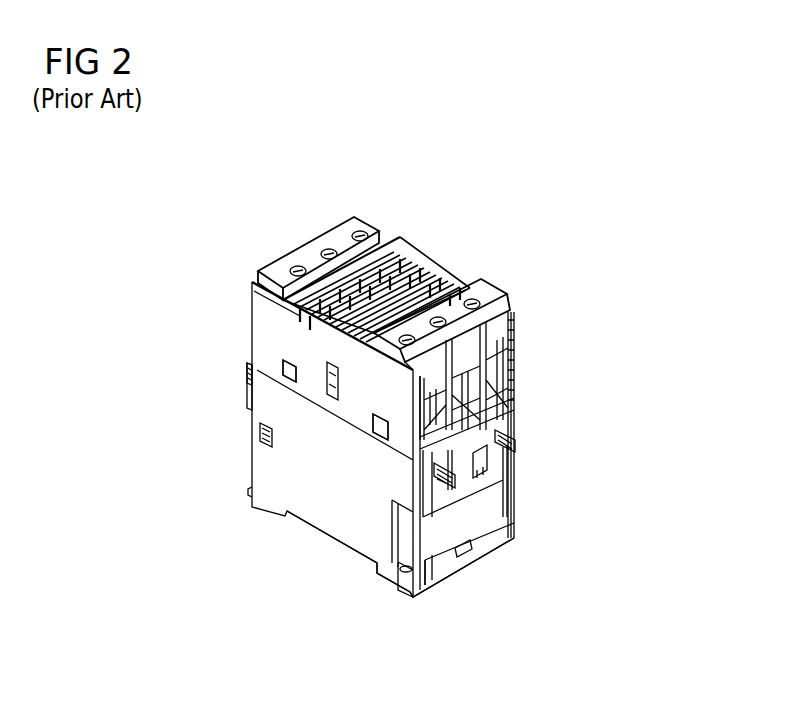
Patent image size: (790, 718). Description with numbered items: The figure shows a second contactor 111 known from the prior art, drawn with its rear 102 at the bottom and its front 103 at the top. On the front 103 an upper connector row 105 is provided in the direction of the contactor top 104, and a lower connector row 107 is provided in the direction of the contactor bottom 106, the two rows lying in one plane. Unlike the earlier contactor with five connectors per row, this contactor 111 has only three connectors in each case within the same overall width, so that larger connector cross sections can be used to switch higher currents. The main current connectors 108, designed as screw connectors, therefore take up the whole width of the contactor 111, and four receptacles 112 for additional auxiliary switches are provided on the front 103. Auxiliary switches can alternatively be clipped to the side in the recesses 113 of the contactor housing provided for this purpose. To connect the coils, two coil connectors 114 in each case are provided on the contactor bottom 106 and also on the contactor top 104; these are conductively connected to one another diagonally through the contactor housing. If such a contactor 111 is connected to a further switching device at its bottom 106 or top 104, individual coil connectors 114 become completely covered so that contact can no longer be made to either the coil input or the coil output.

The rear 102 is at (331, 535).
The front 103 is at (497, 293).
The contactor top 104 is at (214, 411).
The upper connector row 105 is at (277, 268).
The contactor bottom 106 is at (477, 507).
The lower connector row 107 is at (470, 372).
The main current connectors 108 is at (357, 231).
The contactor 111 is at (582, 298).
The receptacles 112 is at (393, 231).
The recesses 113 is at (380, 438).
The coil connectors 114 is at (243, 392).